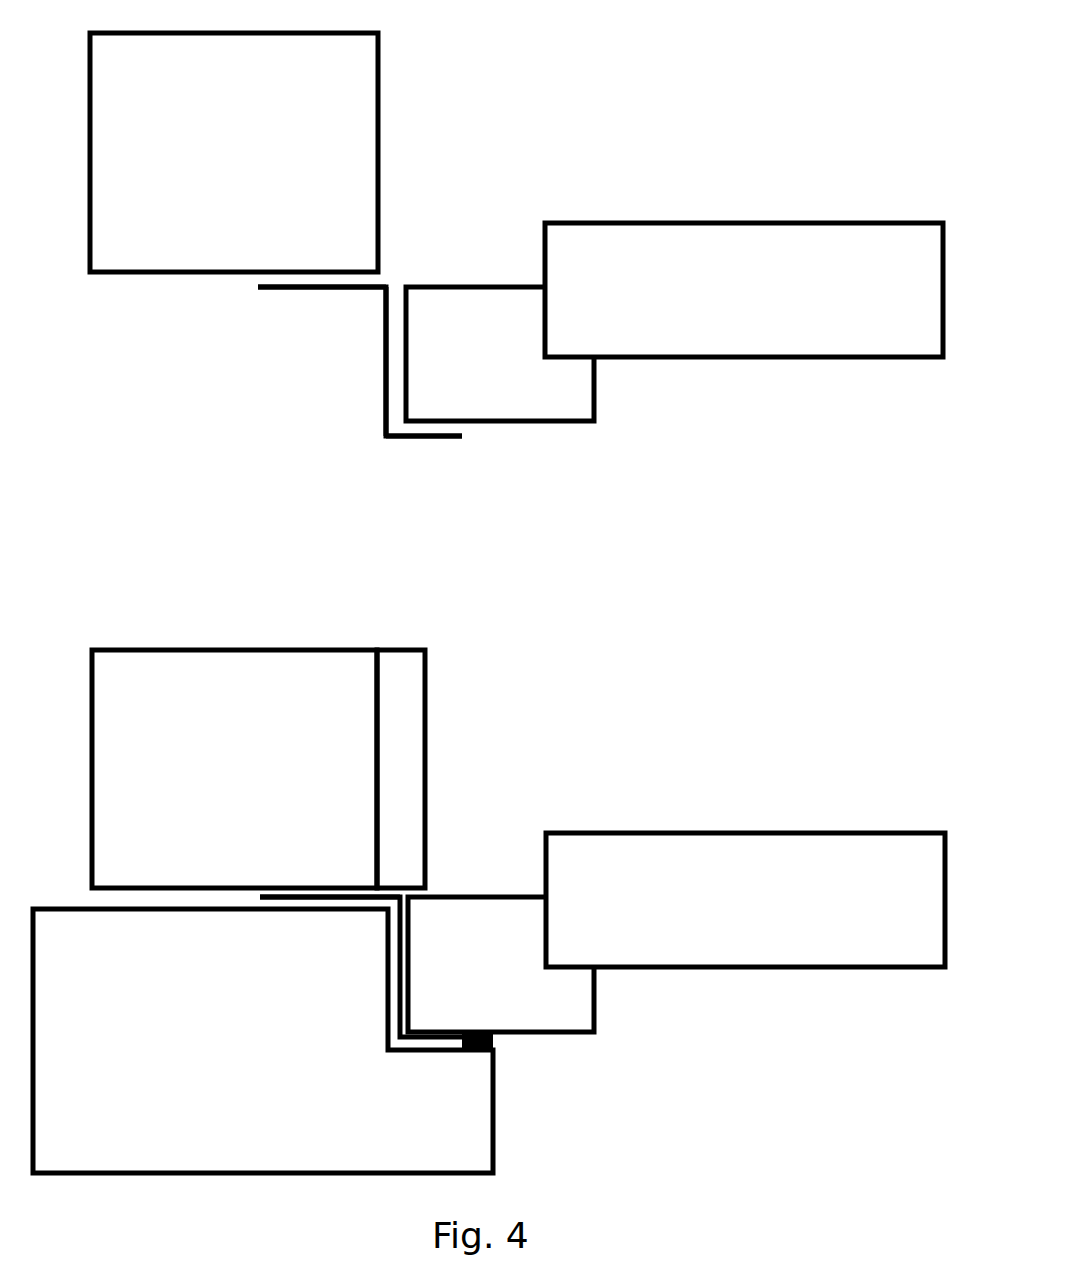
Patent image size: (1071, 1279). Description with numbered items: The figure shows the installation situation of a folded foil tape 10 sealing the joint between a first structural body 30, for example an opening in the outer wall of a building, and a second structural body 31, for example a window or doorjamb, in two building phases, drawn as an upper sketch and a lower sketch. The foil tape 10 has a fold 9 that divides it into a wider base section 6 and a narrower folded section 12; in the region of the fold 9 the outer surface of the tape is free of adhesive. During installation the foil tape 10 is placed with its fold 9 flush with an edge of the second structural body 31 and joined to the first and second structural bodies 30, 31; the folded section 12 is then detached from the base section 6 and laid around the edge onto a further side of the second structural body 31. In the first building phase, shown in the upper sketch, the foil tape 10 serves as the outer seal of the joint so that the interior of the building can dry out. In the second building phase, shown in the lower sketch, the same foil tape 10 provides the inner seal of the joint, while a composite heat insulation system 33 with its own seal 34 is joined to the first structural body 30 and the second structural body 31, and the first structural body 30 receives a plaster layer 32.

The base section 6 is at (360, 373).
The fold 9 is at (386, 438).
The foil tape 10 is at (328, 293).
The folded section 12 is at (440, 437).
The first structural body 30 is at (234, 460).
The second structural body 31 is at (500, 659).
The plaster layer 32 is at (401, 769).
The composite heat insulation system 33 is at (263, 1041).
The seal 34 is at (502, 1045).